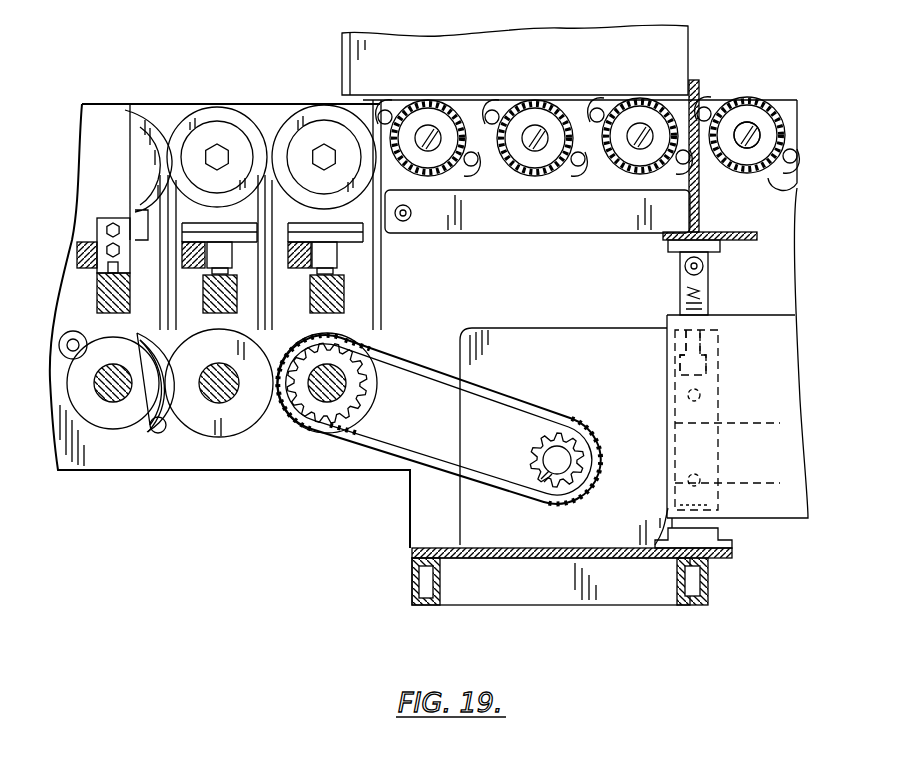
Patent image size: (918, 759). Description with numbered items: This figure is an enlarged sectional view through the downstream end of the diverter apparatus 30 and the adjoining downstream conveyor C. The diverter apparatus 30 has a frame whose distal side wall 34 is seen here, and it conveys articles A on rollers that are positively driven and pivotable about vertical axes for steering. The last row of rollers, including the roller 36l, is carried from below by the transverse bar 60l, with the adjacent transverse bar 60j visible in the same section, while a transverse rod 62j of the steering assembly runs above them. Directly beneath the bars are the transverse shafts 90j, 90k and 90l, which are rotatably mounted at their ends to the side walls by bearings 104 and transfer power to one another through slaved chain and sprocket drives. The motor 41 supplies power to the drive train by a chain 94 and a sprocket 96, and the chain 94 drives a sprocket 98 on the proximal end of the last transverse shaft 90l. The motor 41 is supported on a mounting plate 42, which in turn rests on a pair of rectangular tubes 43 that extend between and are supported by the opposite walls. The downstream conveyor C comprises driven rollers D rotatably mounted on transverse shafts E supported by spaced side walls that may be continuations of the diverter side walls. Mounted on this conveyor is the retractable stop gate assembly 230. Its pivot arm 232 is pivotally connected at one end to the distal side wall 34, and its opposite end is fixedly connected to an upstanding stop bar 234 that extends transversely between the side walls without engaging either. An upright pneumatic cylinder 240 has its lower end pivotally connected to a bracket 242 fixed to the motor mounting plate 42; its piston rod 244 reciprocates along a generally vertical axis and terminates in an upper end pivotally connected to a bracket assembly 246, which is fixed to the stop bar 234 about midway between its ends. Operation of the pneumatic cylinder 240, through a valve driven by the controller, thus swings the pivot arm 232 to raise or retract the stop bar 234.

The diverter apparatus 30 is at (100, 88).
The articles A is at (340, 58).
The downstream conveyor C is at (775, 85).
The driven rollers D is at (775, 186).
The transverse shafts E is at (760, 134).
The roller 36l is at (322, 105).
The transverse rod 62j is at (76, 246).
The transverse bar 60j is at (97, 285).
The transverse bar 60l is at (344, 300).
The transverse shaft 90j is at (113, 405).
The transverse shaft 90k is at (219, 403).
The last transverse shaft 90l is at (288, 428).
The distal side wall 34 is at (119, 462).
The bearings 104 is at (125, 425).
The sprocket 98 is at (325, 400).
The chain 94 is at (405, 450).
The sprocket 96 is at (598, 461).
The pivot arm 232 is at (540, 226).
The motor 41 is at (593, 330).
The retractable stop gate assembly 230 is at (698, 82).
The stop bar 234 is at (699, 190).
The bracket assembly 246 is at (709, 263).
The piston rod 244 is at (712, 350).
The pneumatic cylinder 240 is at (725, 405).
The bracket 242 is at (716, 556).
The rectangular tubes 43 is at (428, 606).
The mounting plate 42 is at (525, 560).